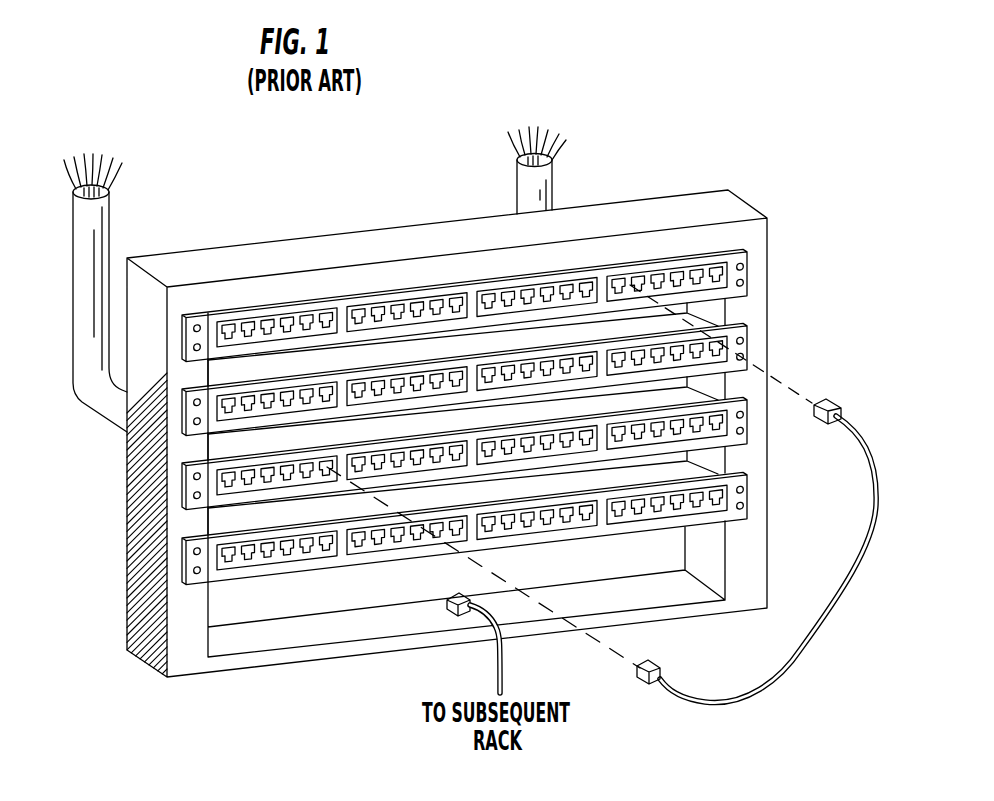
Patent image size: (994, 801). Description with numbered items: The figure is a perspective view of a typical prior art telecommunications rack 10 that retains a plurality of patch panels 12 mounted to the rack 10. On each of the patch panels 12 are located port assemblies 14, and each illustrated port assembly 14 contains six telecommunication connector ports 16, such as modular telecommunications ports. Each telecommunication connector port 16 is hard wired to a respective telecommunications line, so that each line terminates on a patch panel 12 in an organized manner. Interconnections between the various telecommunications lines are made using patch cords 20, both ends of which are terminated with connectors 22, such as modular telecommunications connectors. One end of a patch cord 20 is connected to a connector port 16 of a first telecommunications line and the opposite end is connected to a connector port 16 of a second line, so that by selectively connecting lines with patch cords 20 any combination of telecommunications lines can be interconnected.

The rack 10 is at (652, 220).
The patch panel 12 is at (748, 350).
The port assembly 14 is at (493, 291).
The telecommunication connector port 16 is at (305, 321).
The patch cord 20 is at (851, 575).
The connector 22 is at (835, 401).